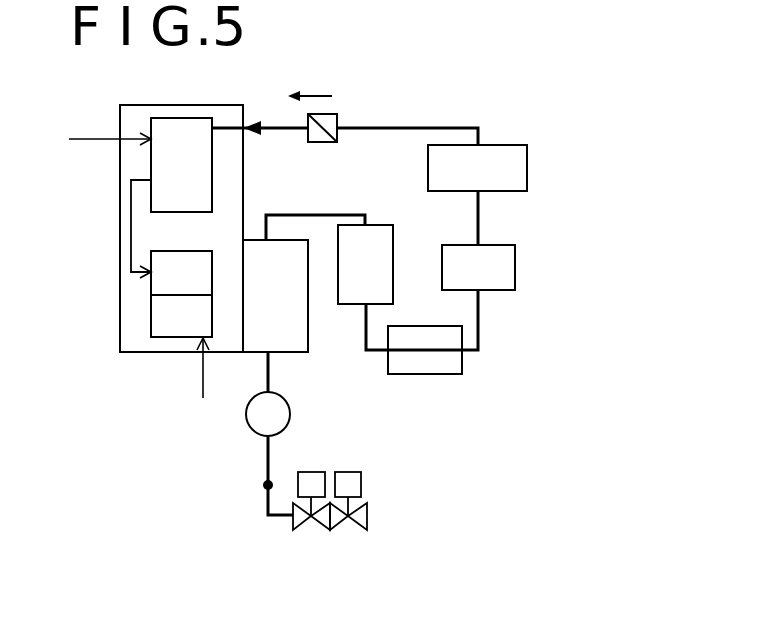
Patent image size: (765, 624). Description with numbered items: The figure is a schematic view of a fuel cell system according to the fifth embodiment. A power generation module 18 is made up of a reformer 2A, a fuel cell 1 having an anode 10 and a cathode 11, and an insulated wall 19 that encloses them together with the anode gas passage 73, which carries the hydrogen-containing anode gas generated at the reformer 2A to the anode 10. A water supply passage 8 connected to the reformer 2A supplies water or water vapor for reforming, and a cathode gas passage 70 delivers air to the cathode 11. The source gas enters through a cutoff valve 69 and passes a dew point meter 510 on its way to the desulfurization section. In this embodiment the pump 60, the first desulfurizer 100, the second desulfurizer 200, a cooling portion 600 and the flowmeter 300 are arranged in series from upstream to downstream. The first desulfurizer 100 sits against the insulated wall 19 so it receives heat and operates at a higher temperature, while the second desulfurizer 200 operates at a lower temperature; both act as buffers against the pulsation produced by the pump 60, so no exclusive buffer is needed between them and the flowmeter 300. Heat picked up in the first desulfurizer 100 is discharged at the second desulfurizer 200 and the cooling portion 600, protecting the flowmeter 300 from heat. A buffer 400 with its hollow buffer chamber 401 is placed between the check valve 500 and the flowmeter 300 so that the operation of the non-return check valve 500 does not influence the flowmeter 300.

The fuel cell 1 is at (151, 310).
The reformer 2A is at (181, 165).
The water supply passage 8 is at (97, 137).
The anode 10 is at (181, 273).
The cathode 11 is at (181, 316).
The power generation module 18 is at (181, 201).
The insulated wall 19 is at (140, 106).
The pump 60 is at (246, 414).
The cutoff valve 69 is at (321, 531).
The cathode gas passage 70 is at (203, 375).
The anode gas passage 73 is at (131, 229).
The first desulfurizer 100 is at (275, 296).
The second desulfurizer 200 is at (365, 264).
The flowmeter 300 is at (515, 268).
The buffer 400 is at (527, 146).
The buffer chamber 401 is at (515, 172).
The check valve 500 is at (340, 112).
The dew point meter 510 is at (262, 488).
The cooling portion 600 is at (462, 375).